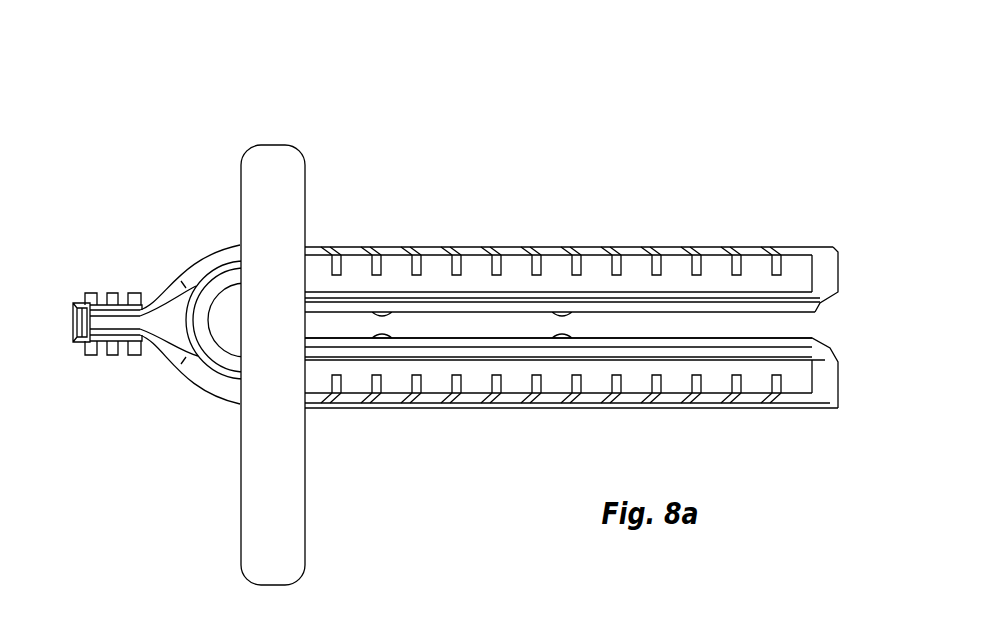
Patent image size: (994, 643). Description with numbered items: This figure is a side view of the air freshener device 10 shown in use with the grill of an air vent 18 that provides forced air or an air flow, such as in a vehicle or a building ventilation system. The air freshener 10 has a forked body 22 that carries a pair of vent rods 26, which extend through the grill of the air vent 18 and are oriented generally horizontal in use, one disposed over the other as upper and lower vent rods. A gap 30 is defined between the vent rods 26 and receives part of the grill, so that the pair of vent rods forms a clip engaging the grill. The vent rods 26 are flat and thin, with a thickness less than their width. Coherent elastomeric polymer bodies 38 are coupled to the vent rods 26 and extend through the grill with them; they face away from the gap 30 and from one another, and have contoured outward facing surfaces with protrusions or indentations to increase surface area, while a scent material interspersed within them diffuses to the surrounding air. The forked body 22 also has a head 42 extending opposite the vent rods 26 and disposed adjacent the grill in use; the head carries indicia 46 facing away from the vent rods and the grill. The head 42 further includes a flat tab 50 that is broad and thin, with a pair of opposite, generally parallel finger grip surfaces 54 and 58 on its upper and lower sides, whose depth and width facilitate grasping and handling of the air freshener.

The air freshener device 10 is at (170, 202).
The air vent 18 is at (270, 145).
The forked body 22 is at (628, 300).
The vent rods 26 is at (695, 307).
The gap 30 is at (773, 327).
The coherent elastomeric polymer bodies 38 is at (508, 250).
The head 42 is at (168, 372).
The indicia 46 is at (75, 317).
The flat tab 50 is at (137, 320).
The finger grip surface 54 is at (121, 302).
The finger grip surface 58 is at (138, 345).